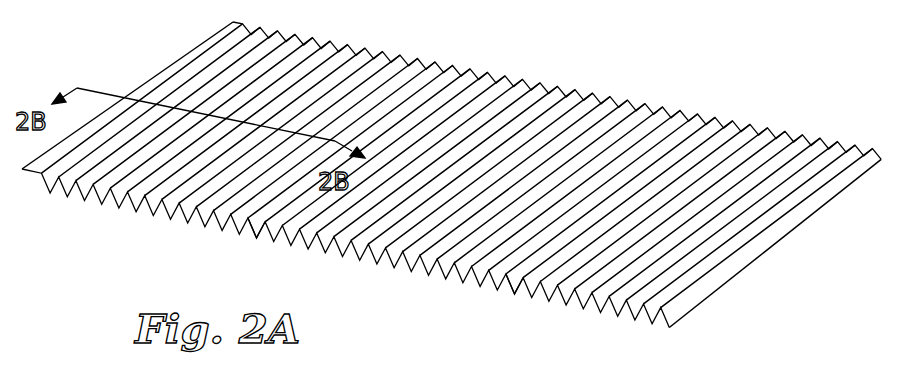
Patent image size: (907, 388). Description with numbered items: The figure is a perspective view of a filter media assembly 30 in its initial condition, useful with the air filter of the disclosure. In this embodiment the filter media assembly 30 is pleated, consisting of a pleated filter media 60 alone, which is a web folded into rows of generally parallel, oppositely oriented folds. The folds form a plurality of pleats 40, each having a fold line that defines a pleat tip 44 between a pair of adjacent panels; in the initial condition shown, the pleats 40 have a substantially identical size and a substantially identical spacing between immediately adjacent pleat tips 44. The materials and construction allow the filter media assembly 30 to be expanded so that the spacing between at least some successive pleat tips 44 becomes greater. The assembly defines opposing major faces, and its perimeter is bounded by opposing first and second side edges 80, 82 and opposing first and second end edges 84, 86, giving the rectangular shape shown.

The filter media assembly 30 is at (451, 177).
The pleat 40 is at (275, 160).
The pleat tip 44 is at (260, 243).
The pleated filter media 60 is at (517, 294).
The first side edge 80 is at (345, 248).
The second side edge 82 is at (453, 72).
The first end edge 84 is at (158, 75).
The second end edge 86 is at (798, 228).